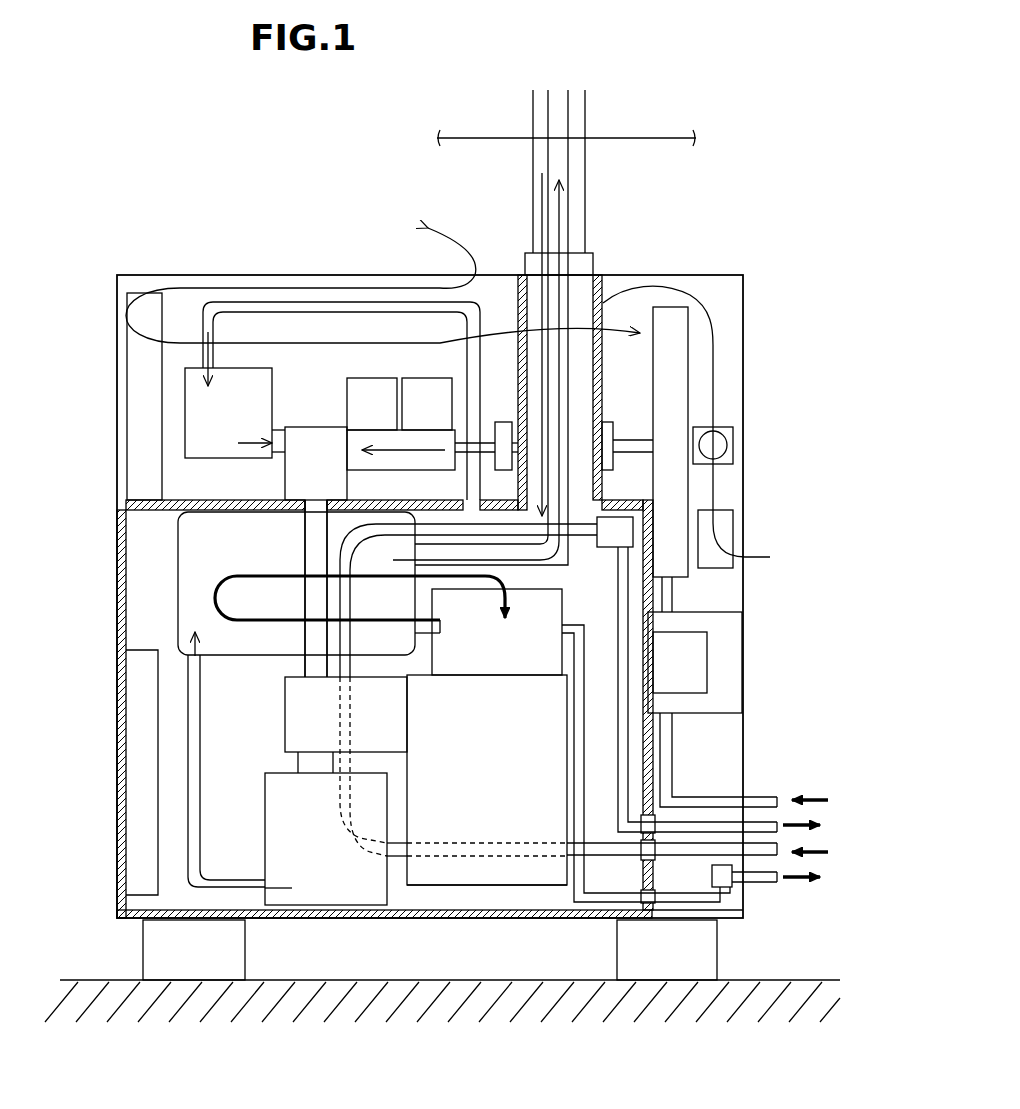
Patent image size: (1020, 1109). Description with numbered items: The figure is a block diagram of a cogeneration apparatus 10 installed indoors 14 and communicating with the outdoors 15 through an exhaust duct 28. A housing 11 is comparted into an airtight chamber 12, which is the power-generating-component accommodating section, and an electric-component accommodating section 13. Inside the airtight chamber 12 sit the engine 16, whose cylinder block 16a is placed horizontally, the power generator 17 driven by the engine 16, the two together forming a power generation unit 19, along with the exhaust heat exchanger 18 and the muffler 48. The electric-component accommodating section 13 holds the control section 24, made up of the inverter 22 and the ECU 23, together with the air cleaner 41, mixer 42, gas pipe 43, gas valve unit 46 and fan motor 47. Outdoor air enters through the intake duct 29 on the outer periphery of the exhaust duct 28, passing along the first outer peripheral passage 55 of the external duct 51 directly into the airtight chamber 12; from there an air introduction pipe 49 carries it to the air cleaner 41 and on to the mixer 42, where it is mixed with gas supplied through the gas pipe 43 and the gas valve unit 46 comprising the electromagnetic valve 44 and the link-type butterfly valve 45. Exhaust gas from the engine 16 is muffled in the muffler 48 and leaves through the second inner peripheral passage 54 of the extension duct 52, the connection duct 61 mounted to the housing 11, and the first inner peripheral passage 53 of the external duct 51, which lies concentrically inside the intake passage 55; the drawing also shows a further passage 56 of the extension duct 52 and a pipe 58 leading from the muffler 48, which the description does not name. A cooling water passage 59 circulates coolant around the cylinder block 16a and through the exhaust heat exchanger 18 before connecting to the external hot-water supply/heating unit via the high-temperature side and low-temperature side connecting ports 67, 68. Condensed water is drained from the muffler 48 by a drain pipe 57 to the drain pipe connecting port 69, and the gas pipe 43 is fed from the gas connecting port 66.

The cogeneration apparatus 10 is at (212, 136).
The housing 11 is at (182, 272).
The airtight chamber 12 is at (178, 500).
The electric-component accommodating section 13 is at (725, 302).
The indoors 14 is at (674, 155).
The outdoors 15 is at (624, 305).
The engine 16 is at (572, 702).
The cylinder block 16a is at (511, 890).
The power generator 17 is at (566, 600).
The exhaust heat exchanger 18 is at (328, 893).
The power generation unit 19 is at (816, 595).
The inverter 22 is at (638, 332).
The ECU 23 is at (166, 313).
The control section 24 is at (518, 172).
The exhaust duct 28 is at (548, 305).
The intake duct 29 is at (530, 163).
The air cleaner 41 is at (248, 368).
The mixer 42 is at (297, 427).
The gas pipe 43 is at (700, 795).
The electromagnetic valve 44 is at (425, 378).
The link-type butterfly valve 45 is at (375, 378).
The gas valve unit 46 is at (390, 315).
The fan motor 47 is at (733, 442).
The muffler 48 is at (177, 560).
The air introduction pipe 49 is at (313, 300).
The external duct 51 is at (559, 327).
The extension duct 52 is at (714, 383).
The first inner peripheral passage 53 is at (572, 167).
The second inner peripheral passage 54 is at (573, 362).
The first outer peripheral passage 55 is at (656, 170).
The intake passage 56 is at (603, 385).
The drain pipe 57 is at (672, 905).
The exhaust connecting pipe 58 is at (220, 878).
The cooling water passage 59 is at (721, 820).
The connection duct 61 is at (598, 263).
The gas connecting port 66 is at (770, 797).
The high-temperature side connecting port 67 is at (784, 815).
The low-temperature side connecting port 68 is at (785, 845).
The drain pipe connecting port 69 is at (764, 882).